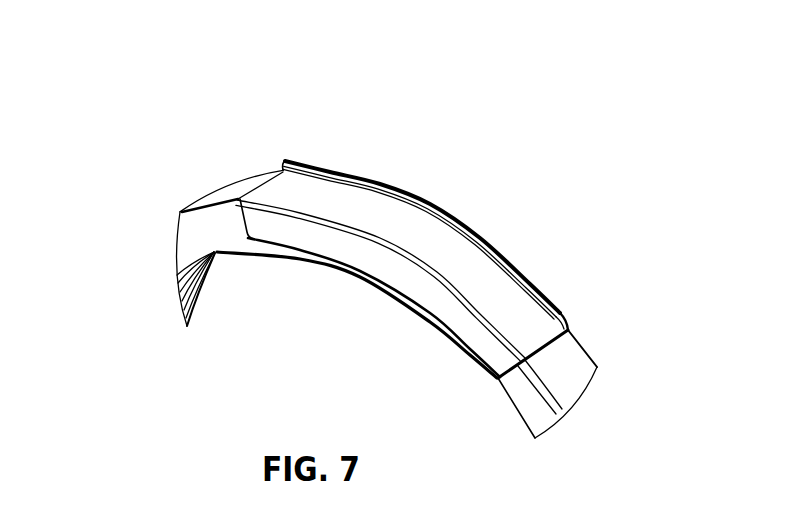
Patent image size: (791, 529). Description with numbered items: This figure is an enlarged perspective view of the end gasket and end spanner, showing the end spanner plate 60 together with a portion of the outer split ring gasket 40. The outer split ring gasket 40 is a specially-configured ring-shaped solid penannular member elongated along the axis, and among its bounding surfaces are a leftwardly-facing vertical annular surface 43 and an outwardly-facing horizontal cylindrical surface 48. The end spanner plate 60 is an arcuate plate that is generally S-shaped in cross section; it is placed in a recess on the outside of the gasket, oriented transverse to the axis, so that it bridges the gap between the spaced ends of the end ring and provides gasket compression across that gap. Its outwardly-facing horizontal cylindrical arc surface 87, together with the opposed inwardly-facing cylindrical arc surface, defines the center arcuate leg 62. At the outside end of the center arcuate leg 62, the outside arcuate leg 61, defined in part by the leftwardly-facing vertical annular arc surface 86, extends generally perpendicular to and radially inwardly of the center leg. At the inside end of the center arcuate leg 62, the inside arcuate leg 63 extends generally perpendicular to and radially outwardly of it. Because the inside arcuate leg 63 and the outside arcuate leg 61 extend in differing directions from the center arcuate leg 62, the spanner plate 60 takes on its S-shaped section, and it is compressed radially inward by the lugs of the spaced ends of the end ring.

The outer split ring gasket 40 is at (175, 251).
The leftwardly-facing vertical annular surface 43 is at (215, 243).
The outwardly-facing horizontal cylindrical surface 48 is at (560, 376).
The end spanner plate 60 is at (533, 220).
The outside arcuate leg 61 is at (477, 342).
The center arcuate leg 62 is at (557, 310).
The inside arcuate leg 63 is at (355, 158).
The leftwardly-facing vertical annular arc surface 86 is at (398, 272).
The outwardly-facing horizontal cylindrical arc surface 87 is at (433, 245).